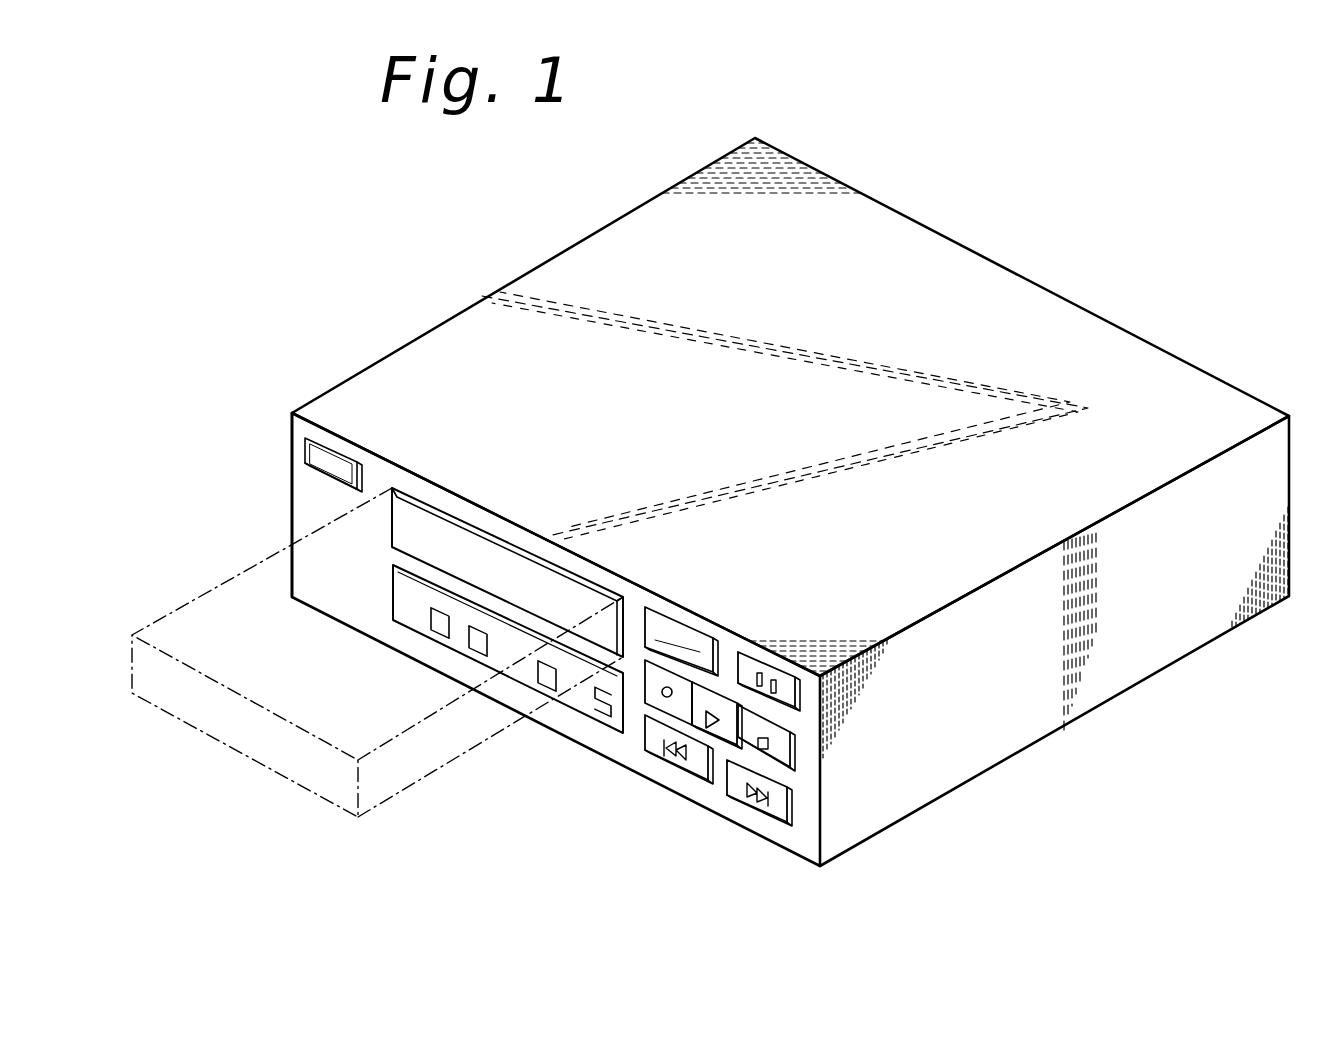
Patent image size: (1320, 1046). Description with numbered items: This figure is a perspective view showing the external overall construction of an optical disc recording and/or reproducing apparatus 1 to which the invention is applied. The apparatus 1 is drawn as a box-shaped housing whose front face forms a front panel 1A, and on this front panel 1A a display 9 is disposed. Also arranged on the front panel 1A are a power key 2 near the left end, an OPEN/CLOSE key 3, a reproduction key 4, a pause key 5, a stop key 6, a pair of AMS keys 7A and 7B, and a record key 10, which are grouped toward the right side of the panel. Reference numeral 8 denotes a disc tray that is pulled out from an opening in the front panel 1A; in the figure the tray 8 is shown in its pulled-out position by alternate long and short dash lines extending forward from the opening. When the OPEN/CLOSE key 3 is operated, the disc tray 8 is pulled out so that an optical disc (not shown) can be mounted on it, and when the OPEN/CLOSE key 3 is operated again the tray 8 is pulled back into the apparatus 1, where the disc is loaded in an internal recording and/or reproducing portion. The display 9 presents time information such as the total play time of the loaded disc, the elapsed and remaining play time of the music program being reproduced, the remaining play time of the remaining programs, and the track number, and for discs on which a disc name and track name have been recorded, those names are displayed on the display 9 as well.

The optical disc recording and/or reproducing apparatus 1 is at (403, 331).
The front panel 1A is at (302, 498).
The power key 2 is at (305, 450).
The OPEN/CLOSE key 3 is at (677, 615).
The reproduction key 4 is at (725, 697).
The pause key 5 is at (800, 694).
The stop key 6 is at (795, 752).
The AMS key 7A is at (677, 769).
The AMS key 7B is at (762, 813).
The disc tray 8 is at (497, 552).
The display 9 is at (525, 686).
The record key 10 is at (648, 703).